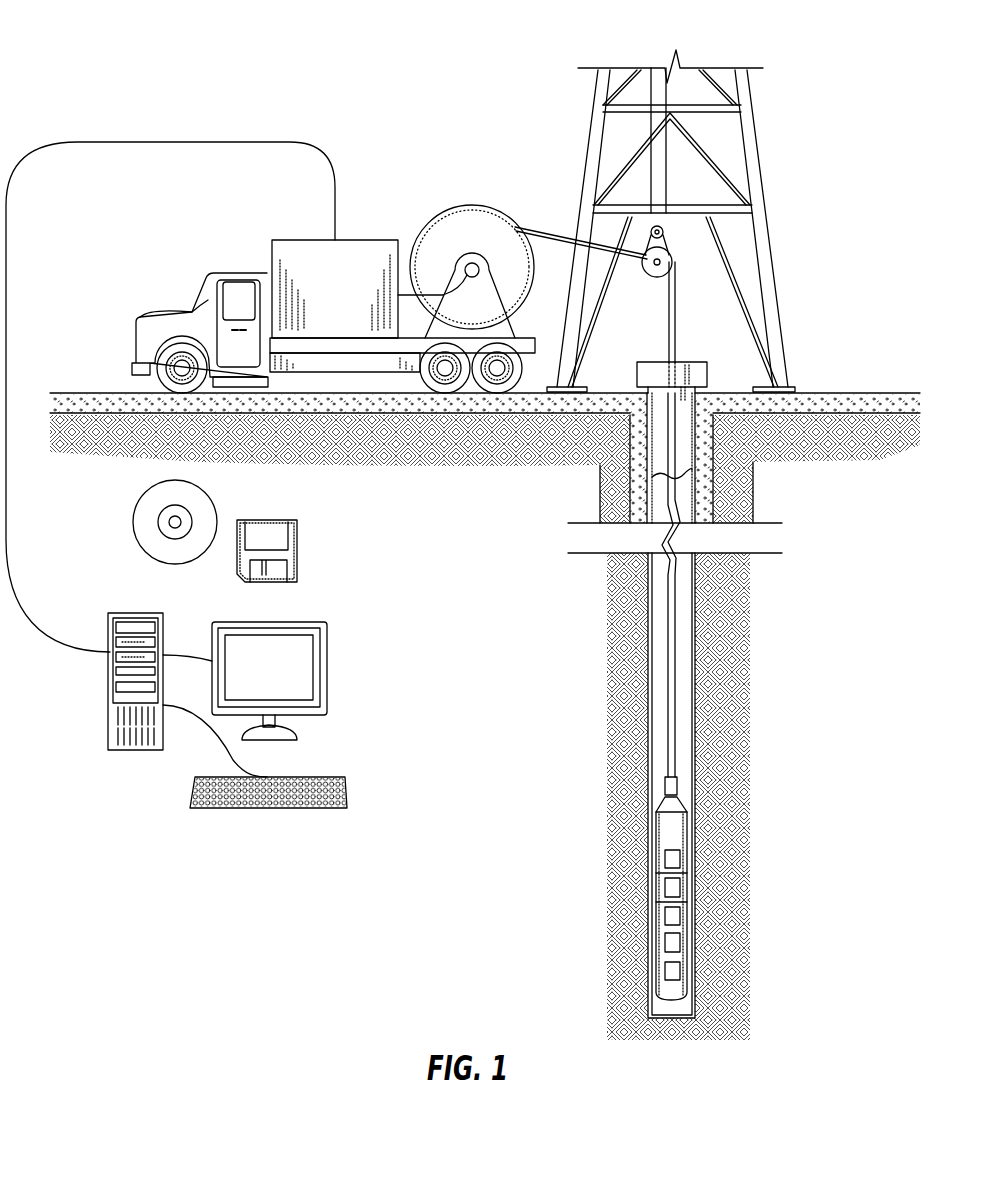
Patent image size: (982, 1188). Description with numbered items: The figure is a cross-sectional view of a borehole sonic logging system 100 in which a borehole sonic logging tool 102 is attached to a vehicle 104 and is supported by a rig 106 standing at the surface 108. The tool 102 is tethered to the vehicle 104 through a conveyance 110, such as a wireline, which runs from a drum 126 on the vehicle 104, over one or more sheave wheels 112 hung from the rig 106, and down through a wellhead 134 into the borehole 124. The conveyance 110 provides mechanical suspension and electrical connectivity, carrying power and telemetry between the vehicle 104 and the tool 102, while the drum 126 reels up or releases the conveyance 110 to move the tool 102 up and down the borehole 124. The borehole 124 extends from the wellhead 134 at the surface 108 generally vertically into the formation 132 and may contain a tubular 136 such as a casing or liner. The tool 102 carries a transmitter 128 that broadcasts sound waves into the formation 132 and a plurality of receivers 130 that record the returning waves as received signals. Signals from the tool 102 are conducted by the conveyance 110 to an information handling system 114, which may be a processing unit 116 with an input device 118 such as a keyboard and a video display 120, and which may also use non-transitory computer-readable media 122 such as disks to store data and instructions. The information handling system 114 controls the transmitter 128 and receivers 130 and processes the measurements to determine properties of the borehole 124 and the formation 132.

The borehole sonic logging system 100 is at (133, 60).
The borehole sonic logging tool 102 is at (635, 858).
The vehicle 104 is at (347, 240).
The rig 106 is at (767, 225).
The surface 108 is at (833, 393).
The conveyance 110 is at (668, 645).
The sheave wheels 112 is at (655, 285).
The information handling system 114 is at (128, 840).
The processing unit 116 is at (135, 613).
The input device 118 is at (347, 790).
The video display 120 is at (270, 622).
The non-transitory computer-readable media 122 is at (267, 520).
The borehole 124 is at (693, 517).
The drum 126 is at (467, 208).
The transmitter 128 is at (680, 858).
The receiver 130 is at (680, 972).
The formation 132 is at (868, 632).
The wellhead 134 is at (712, 373).
The tubular 136 is at (653, 450).